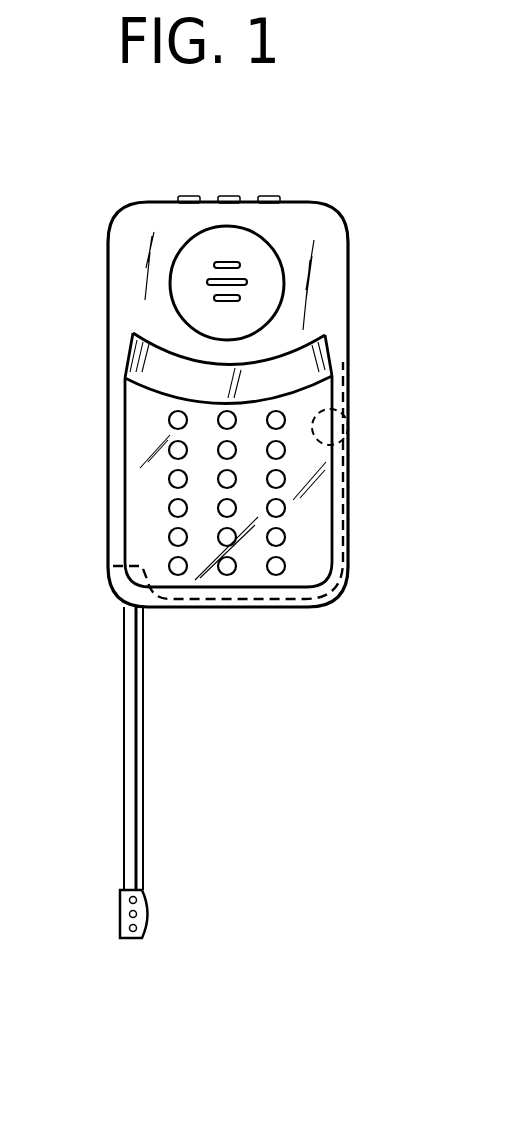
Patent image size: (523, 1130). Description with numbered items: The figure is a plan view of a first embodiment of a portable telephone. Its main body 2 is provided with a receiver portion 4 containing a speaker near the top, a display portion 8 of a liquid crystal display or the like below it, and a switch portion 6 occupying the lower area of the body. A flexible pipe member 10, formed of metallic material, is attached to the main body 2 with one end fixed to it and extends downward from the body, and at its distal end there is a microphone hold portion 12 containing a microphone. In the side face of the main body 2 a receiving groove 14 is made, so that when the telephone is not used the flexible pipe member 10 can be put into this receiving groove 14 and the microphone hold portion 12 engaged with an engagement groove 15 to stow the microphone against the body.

The main body 2 is at (349, 270).
The receiver portion 4 is at (207, 282).
The switch portion 6 is at (310, 515).
The display portion 8 is at (310, 358).
The flexible pipe member 10 is at (143, 748).
The microphone hold portion 12 is at (120, 910).
The receiving groove 14 is at (306, 605).
The engagement groove 15 is at (348, 427).